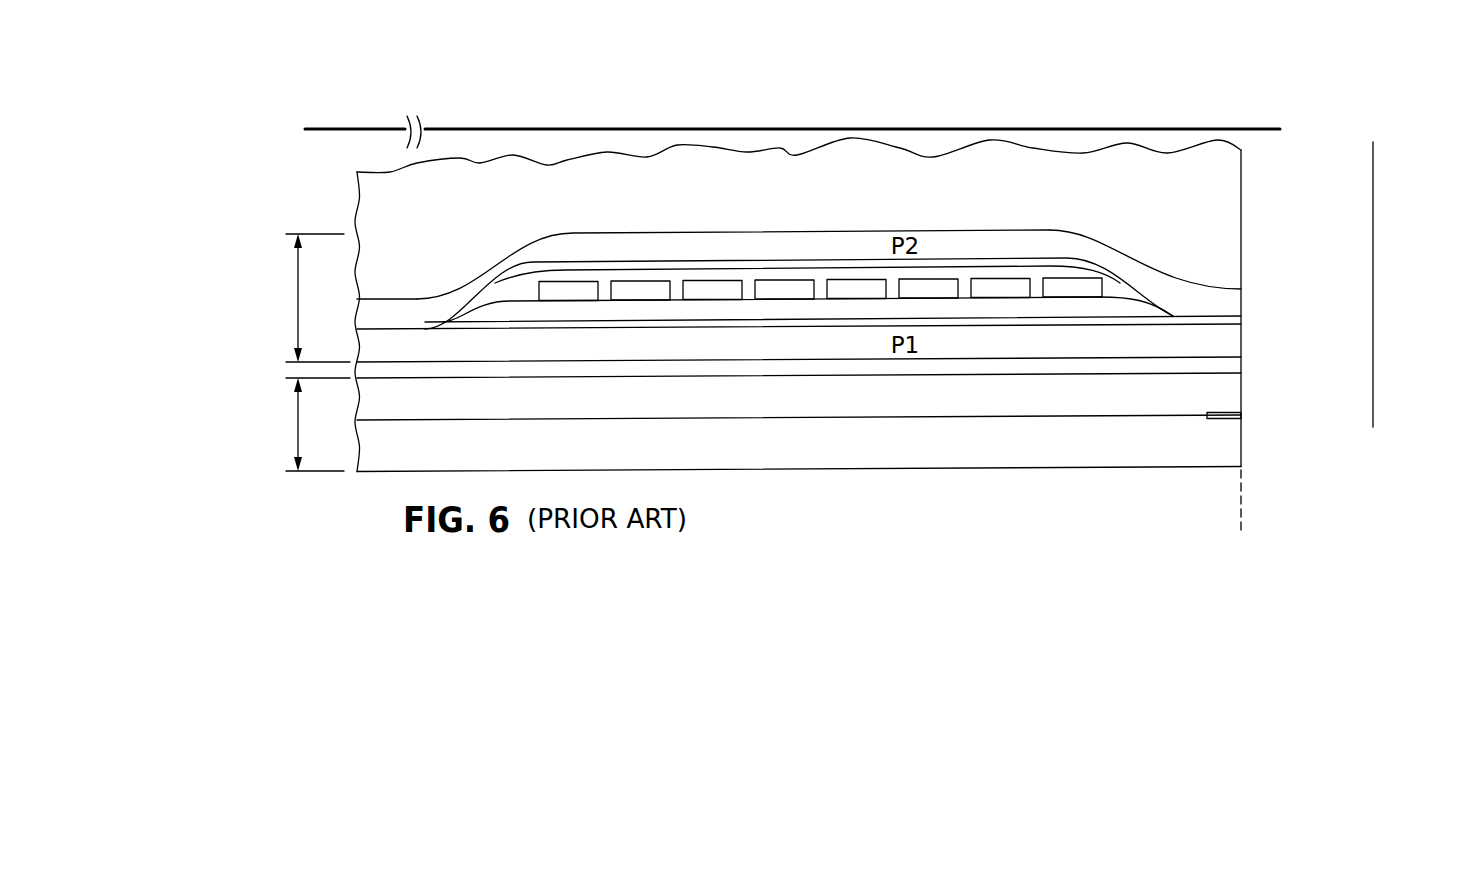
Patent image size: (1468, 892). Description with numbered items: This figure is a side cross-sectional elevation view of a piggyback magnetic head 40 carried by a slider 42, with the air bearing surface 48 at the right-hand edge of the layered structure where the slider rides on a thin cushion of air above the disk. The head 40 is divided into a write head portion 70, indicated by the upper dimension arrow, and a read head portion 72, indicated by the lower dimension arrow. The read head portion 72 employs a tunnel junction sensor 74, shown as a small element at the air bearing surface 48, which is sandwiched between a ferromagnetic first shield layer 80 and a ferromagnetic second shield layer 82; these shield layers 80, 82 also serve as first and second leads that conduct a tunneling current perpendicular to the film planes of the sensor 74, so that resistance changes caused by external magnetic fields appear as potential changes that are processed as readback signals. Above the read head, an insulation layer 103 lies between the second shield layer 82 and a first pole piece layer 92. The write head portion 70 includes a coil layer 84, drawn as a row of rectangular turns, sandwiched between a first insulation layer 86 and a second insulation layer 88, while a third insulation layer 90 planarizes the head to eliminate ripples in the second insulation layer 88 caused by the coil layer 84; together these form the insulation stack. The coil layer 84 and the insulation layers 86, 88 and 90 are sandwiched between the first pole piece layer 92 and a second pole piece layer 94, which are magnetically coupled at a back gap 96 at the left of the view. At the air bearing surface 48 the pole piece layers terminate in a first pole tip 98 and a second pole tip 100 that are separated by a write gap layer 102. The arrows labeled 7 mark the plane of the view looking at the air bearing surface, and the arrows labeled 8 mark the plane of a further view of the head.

The section line 8- 8 is at (1270, 118).
The section line 7- 7 is at (1388, 421).
The magnetic head 40 is at (336, 184).
The slider 42 is at (1230, 179).
The air bearing surface 48 is at (1241, 526).
The write head portion 70 is at (295, 303).
The read head portion 72 is at (295, 431).
The tunnel junction sensor 74 is at (1241, 416).
The first shield layer 80 is at (982, 450).
The second shield layer 82 is at (1100, 396).
The coil layer 84 is at (852, 287).
The first insulation layer 86 is at (752, 310).
The second insulation layer 88 is at (1118, 290).
The third insulation layer 90 is at (613, 265).
The first pole piece layer 92 is at (1152, 347).
The second pole piece layer 94 is at (1002, 243).
The back gap 96 is at (403, 327).
The first pole tip 98 is at (1241, 345).
The second pole tip 100 is at (1235, 297).
The write gap layer 102 is at (1241, 320).
The insulation layer 103 is at (1048, 368).